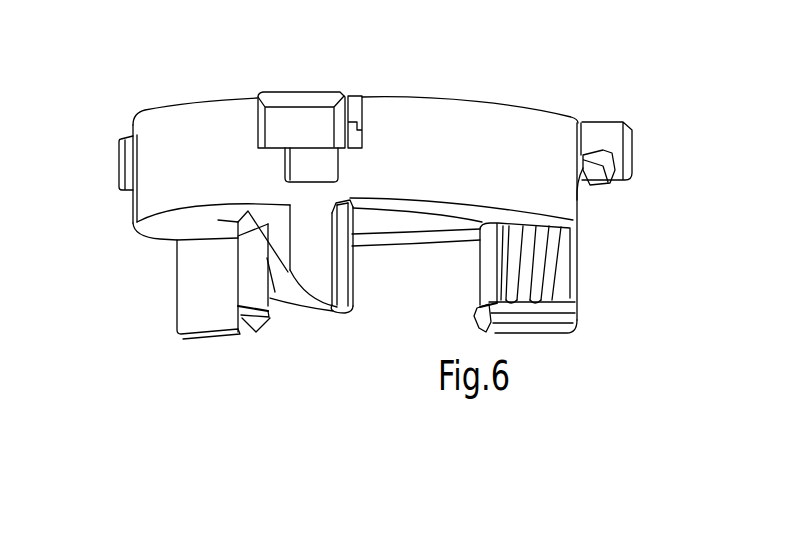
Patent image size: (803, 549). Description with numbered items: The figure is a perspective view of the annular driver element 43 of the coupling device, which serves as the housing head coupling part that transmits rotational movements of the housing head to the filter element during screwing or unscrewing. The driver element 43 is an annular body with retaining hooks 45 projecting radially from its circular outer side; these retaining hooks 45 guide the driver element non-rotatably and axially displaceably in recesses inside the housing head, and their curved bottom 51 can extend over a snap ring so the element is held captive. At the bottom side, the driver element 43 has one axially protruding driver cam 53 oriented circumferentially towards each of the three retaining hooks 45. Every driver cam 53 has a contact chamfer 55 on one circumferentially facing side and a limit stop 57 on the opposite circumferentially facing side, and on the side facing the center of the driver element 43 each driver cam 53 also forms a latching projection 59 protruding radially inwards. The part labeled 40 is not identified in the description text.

The mounting block 40 is at (302, 120).
The driver element 43 is at (208, 124).
The retaining hooks 45 is at (120, 143).
The curved bottom 51 is at (352, 133).
The driver cam 53 is at (198, 337).
The contact chamfer 55 is at (267, 262).
The limit stop 57 is at (204, 262).
The latching projection 59 is at (258, 330).